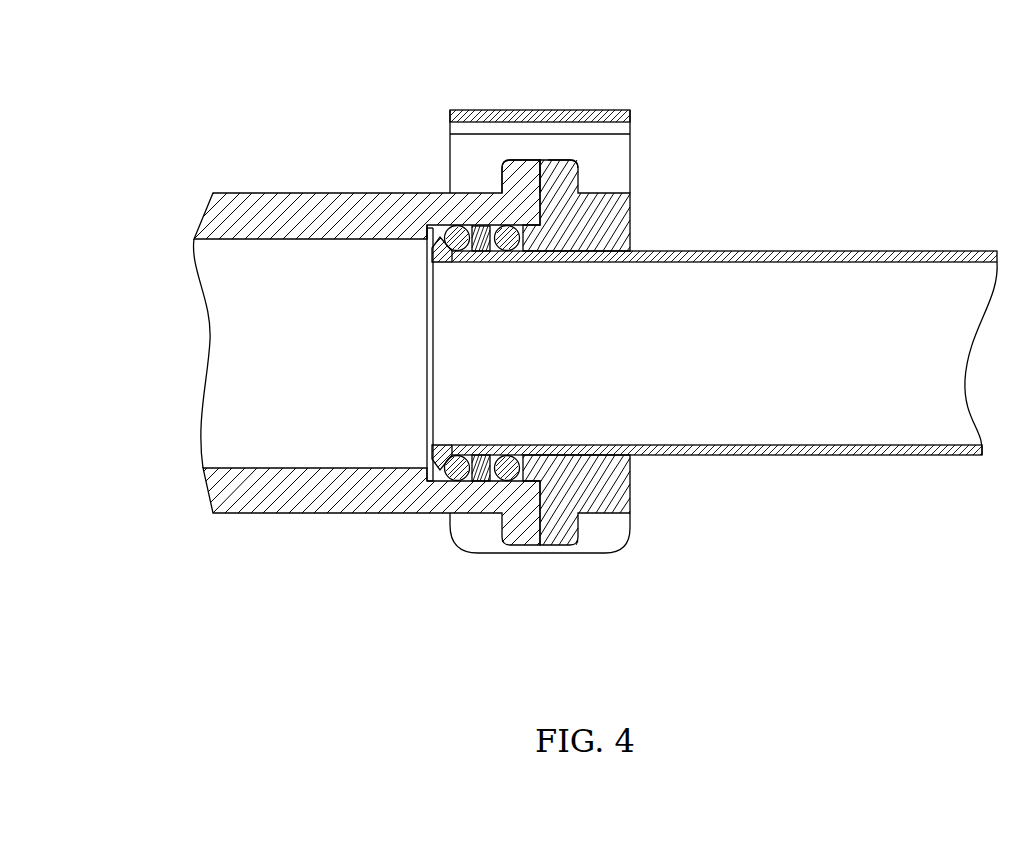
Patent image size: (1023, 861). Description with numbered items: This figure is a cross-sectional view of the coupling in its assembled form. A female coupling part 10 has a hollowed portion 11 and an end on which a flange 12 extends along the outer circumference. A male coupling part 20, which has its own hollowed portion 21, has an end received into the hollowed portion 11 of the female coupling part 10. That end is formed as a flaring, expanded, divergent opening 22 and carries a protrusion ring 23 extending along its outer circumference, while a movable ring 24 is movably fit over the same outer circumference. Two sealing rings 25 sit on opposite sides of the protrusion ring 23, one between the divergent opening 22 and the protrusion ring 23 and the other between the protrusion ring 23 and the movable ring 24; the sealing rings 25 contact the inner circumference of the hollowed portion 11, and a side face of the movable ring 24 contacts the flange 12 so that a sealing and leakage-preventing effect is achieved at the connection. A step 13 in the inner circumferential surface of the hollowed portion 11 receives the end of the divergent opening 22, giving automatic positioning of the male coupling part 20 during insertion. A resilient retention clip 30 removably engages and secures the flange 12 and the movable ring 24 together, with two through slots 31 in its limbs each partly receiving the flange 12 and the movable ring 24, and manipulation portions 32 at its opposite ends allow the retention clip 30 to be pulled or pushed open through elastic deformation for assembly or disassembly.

The female coupling part 10 is at (286, 193).
The hollowed portion 11 is at (300, 444).
The flange 12 is at (522, 172).
The step 13 is at (443, 224).
The male coupling part 20 is at (852, 252).
The hollowed portion 21 is at (870, 418).
The divergent opening 22 is at (431, 257).
The protrusion ring 23 is at (480, 262).
The movable ring 24 is at (608, 230).
The sealing ring 25 is at (450, 262).
The retention clip 30 is at (560, 110).
The through slot 31 is at (565, 156).
The manipulation portion 32 is at (610, 541).